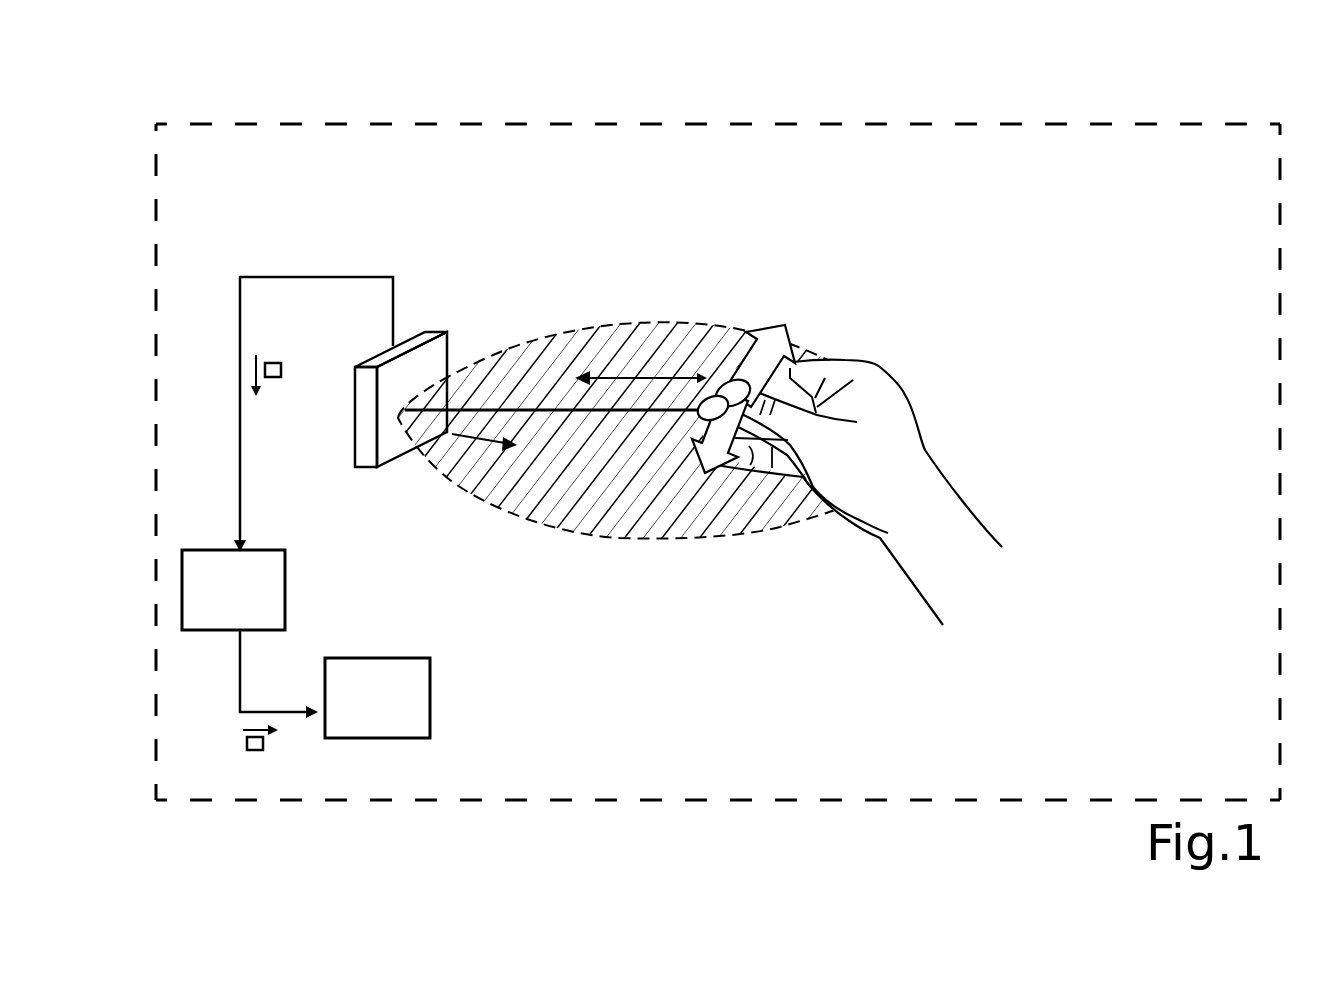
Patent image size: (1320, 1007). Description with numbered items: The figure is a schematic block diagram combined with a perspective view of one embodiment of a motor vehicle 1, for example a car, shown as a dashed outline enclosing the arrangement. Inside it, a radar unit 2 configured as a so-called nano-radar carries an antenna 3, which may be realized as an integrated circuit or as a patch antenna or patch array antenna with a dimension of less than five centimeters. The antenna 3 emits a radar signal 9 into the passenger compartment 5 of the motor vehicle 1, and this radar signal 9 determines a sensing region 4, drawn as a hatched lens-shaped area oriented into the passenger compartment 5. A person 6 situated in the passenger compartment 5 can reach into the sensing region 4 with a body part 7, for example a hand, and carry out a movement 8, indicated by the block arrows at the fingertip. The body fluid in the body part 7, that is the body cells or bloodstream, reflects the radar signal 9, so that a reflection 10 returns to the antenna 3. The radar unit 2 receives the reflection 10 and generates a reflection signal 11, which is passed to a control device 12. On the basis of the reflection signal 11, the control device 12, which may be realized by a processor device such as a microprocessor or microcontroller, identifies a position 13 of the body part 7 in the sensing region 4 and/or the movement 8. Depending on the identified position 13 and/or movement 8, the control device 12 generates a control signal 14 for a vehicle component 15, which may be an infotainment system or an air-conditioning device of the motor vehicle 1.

The motor vehicle 1 is at (204, 123).
The radar unit 2 is at (346, 393).
The antenna 3 is at (390, 446).
The sensing region 4 is at (624, 540).
The passenger compartment 5 is at (595, 419).
The person 6 is at (882, 490).
The body part 7 is at (913, 397).
The movement 8 is at (782, 324).
The radar signal 9 is at (494, 448).
The reflection 10 is at (613, 376).
The reflection signal 11 is at (275, 378).
The control device 12 is at (285, 601).
The position 13 is at (700, 377).
The control signal 14 is at (263, 745).
The vehicle component 15 is at (430, 698).